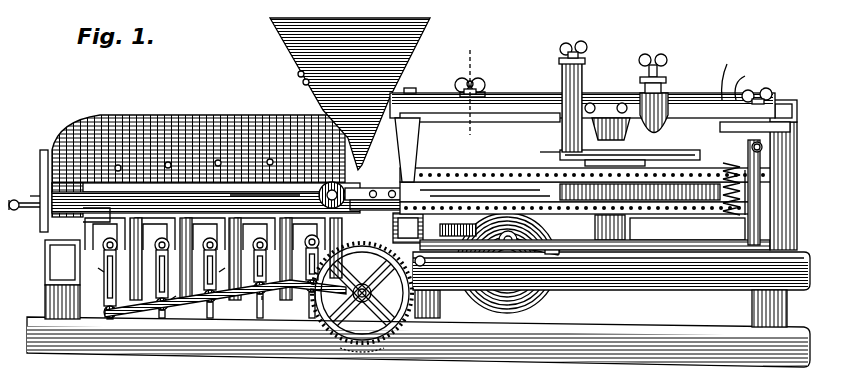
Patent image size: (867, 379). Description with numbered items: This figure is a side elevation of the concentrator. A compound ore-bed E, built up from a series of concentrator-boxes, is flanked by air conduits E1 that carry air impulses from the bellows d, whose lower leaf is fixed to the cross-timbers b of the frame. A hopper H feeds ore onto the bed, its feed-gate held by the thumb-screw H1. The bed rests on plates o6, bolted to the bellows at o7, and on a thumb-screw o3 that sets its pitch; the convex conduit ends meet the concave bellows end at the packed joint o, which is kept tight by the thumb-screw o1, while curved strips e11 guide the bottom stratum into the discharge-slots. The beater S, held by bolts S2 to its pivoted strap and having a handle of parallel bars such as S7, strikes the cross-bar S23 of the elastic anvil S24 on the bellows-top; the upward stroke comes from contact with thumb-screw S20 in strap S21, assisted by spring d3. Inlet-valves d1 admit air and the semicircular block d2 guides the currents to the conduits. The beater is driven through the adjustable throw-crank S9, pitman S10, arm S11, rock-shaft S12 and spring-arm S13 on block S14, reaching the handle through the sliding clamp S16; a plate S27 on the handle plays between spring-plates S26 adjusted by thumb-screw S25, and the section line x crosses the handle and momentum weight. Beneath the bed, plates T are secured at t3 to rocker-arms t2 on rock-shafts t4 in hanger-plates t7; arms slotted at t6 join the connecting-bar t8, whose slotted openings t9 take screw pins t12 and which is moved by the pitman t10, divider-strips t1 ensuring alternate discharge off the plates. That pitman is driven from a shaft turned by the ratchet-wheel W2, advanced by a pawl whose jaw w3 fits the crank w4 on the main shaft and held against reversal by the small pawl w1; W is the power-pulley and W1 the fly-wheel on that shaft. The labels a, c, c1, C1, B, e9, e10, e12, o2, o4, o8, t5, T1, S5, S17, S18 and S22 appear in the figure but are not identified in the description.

The base frame a is at (418, 328).
The cross-timbers of the frame b is at (408, 228).
The upright post c is at (783, 186).
The guide box c1 is at (783, 111).
The bellows d is at (611, 289).
The inlet-valves d1 is at (62, 262).
The semicircular block d2 is at (62, 302).
The spring d3 is at (738, 200).
The compound ore-bed E is at (206, 166).
The air conduits E1 is at (265, 199).
The cross bar C1 is at (206, 202).
The pin e9 is at (120, 166).
The pin e10 is at (170, 163).
The curved wire-gauze strips e11 is at (220, 161).
The pin e12 is at (271, 159).
The hopper H is at (350, 94).
The thumb-screw H1 is at (298, 74).
The joint o is at (28, 194).
The thumb-screw o1 is at (40, 156).
The thumb screw o2 is at (28, 210).
The thumb-screw o3 is at (91, 220).
The sprocket o4 is at (321, 195).
The plates o6 is at (375, 211).
The bolting points o7 is at (374, 187).
The pivot pin o8 is at (405, 170).
The plates T is at (203, 259).
The cam plate T1 is at (290, 248).
The divider-strips t1 is at (254, 300).
The rocker-arms t2 is at (225, 257).
The securing points t3 is at (255, 278).
The rock-shafts t4 is at (95, 275).
The lever t5 is at (225, 265).
The slot t6 is at (204, 278).
The hanger-plates t7 is at (104, 248).
The connecting-bar t8 is at (155, 278).
The slotted openings t9 is at (174, 291).
The pitman t10 is at (302, 276).
The connecting-screw pins t12 is at (104, 310).
The power-pulley W is at (462, 86).
The fly-wheel W1 is at (507, 263).
The ratchet-wheel W2 is at (362, 297).
The small pawl w1 is at (445, 245).
The jaw of the pawl w3 is at (500, 252).
The crank w4 is at (555, 254).
The conveyor belt B is at (575, 192).
The beater S is at (412, 170).
The bolts S2 is at (410, 88).
The clamp screw S5 is at (482, 80).
The handle bar S7 is at (472, 103).
The adjustable throw-crank S9 is at (595, 156).
The pitman S10 is at (575, 221).
The arm S11 is at (738, 217).
The rock-shaft S12 is at (762, 147).
The spring-arm S13 is at (690, 150).
The block S14 is at (752, 152).
The adjustable sliding clamp S16 is at (654, 113).
The wing nut S17 is at (667, 60).
The nut S18 is at (666, 80).
The thumb-screw S20 is at (587, 47).
The strap S21 is at (570, 105).
The bracket S22 is at (588, 100).
The cross-bar S23 is at (610, 160).
The elastic anvil S24 is at (607, 143).
The thumb-screw S25 is at (772, 90).
The spring-plates S26 is at (749, 84).
The plate S27 is at (733, 76).
The section line x is at (468, 92).